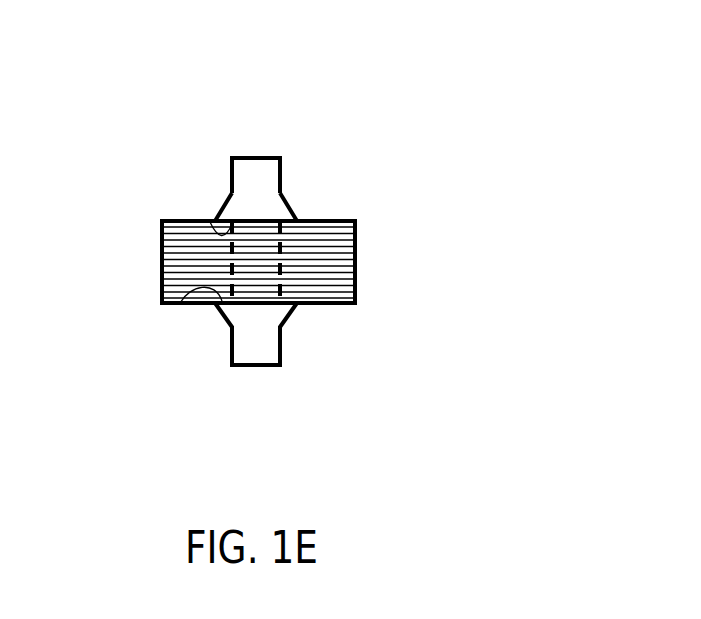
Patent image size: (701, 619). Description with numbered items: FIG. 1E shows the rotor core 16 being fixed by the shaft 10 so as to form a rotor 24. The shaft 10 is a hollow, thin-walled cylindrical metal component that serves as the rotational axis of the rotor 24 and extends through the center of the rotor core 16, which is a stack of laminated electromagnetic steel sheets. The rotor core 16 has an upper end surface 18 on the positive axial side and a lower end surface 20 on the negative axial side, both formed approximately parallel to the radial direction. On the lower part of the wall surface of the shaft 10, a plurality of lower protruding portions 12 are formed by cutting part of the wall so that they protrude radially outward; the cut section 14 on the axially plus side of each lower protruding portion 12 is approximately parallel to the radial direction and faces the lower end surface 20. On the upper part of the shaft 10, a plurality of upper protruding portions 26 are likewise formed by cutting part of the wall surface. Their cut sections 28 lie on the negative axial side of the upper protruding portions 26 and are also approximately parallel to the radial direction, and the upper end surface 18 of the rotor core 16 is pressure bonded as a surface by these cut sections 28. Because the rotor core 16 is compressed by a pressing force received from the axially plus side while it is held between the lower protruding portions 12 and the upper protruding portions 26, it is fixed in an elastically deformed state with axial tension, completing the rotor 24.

The rotor 24 is at (280, 120).
The shaft 10 is at (283, 175).
The lower protruding portion 12 is at (217, 311).
The cut section 14 is at (180, 303).
The rotor core 16 is at (358, 242).
The upper end surface 18 is at (313, 221).
The lower end surface 20 is at (323, 305).
The upper protruding portion 26 is at (224, 199).
The cut section 28 is at (222, 236).